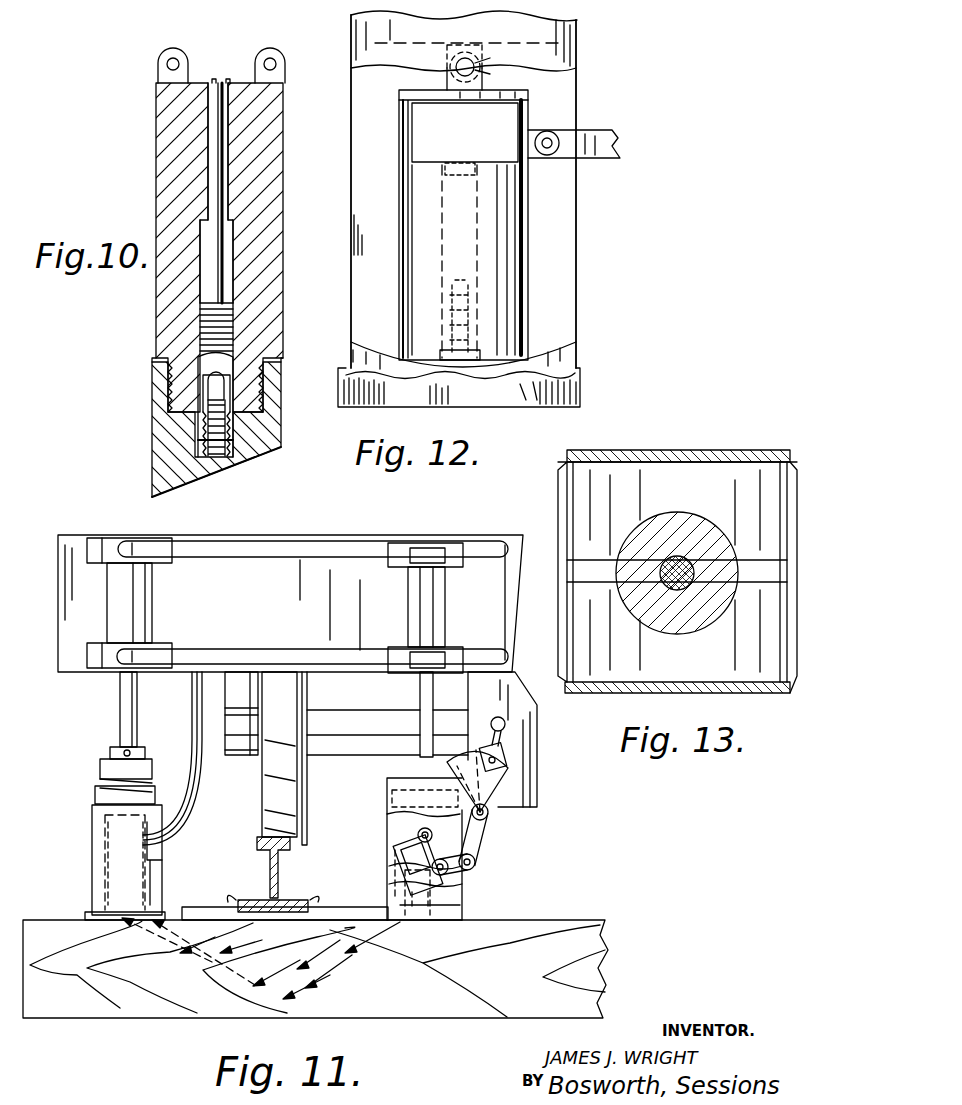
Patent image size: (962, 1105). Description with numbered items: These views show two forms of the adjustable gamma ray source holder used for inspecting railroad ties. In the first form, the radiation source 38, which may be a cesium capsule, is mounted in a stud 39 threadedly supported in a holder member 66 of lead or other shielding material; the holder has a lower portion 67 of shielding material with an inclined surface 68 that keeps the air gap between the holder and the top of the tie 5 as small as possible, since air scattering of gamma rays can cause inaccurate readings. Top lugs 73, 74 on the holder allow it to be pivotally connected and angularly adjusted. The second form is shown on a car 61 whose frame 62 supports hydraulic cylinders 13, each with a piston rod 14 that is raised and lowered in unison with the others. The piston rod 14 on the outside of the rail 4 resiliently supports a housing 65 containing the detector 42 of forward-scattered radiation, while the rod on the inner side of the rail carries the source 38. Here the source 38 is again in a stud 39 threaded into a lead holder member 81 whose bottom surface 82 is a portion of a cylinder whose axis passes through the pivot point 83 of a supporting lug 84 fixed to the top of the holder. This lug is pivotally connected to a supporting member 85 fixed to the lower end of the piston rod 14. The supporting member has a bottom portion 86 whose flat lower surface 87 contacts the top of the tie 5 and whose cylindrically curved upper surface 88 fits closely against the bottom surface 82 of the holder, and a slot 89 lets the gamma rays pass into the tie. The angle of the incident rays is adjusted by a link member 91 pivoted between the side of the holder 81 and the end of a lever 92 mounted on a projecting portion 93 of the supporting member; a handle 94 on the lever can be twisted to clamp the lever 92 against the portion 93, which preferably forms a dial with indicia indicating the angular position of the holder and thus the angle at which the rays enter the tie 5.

In FIG. 11, the rail 4 is at (280, 880).
In FIG. 11, the tie 5 is at (575, 920).
In FIG. 12, the hydraulic cylinder 13 is at (608, 257).
In FIG. 11, the hydraulic cylinder 13 is at (145, 620).
In FIG. 11, the piston rod 14 is at (120, 697).
In FIG. 10, the radiation source 38 is at (198, 428).
In FIG. 12, the radiation source 38 is at (472, 340).
In FIG. 13, the radiation source 38 is at (696, 559).
In FIG. 11, the radiation source 38 is at (432, 905).
In FIG. 10, the stud 39 is at (233, 440).
In FIG. 12, the stud 39 is at (442, 242).
In FIG. 13, the stud 39 is at (686, 590).
In FIG. 11, the detector 42 is at (105, 885).
In FIG. 11, the car 61 is at (347, 538).
In FIG. 11, the frame 62 is at (75, 540).
In FIG. 11, the housing 65 is at (92, 830).
In FIG. 10, the holder member 66 is at (156, 322).
In FIG. 10, the lower portion 67 is at (155, 463).
In FIG. 10, the inclined surface 68 is at (250, 458).
In FIG. 10, the top lug 73 is at (160, 62).
In FIG. 10, the lug 74 is at (285, 66).
In FIG. 12, the holder member 81 is at (528, 230).
In FIG. 13, the holder member 81 is at (675, 632).
In FIG. 11, the holder member 81 is at (396, 866).
In FIG. 12, the bottom surface 82 is at (430, 366).
In FIG. 12, the pivot point 83 is at (460, 60).
In FIG. 12, the supporting lug 84 is at (490, 68).
In FIG. 11, the supporting lug 84 is at (400, 842).
In FIG. 12, the supporting member 85 is at (576, 100).
In FIG. 11, the supporting member 85 is at (462, 876).
In FIG. 12, the bottom portion 86 is at (538, 368).
In FIG. 12, the lower surface 87 is at (510, 408).
In FIG. 12, the upper surface 88 is at (388, 362).
In FIG. 13, the slot 89 is at (580, 566).
In FIG. 12, the link member 91 is at (612, 155).
In FIG. 11, the link member 91 is at (448, 868).
In FIG. 11, the lever 92 is at (483, 835).
In FIG. 11, the projecting portion 93 is at (505, 770).
In FIG. 11, the handle 94 is at (506, 722).